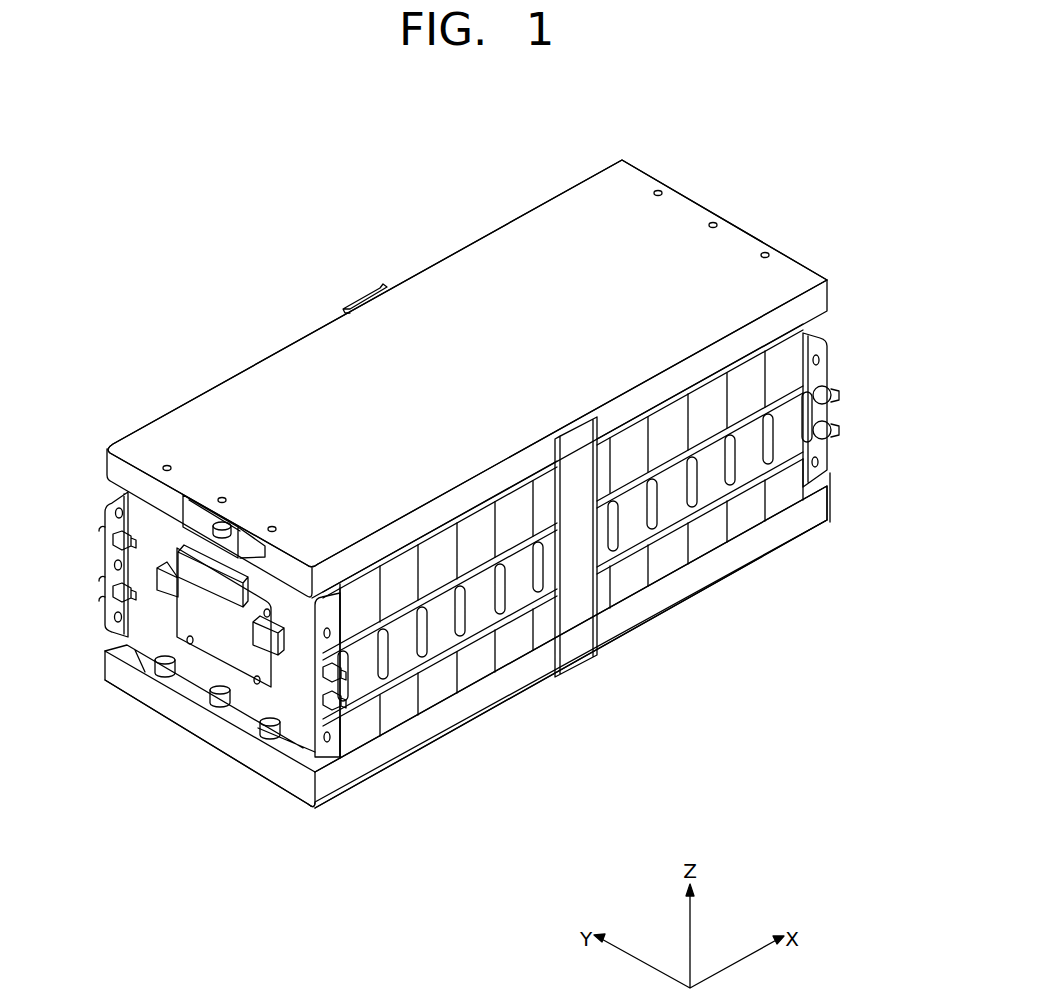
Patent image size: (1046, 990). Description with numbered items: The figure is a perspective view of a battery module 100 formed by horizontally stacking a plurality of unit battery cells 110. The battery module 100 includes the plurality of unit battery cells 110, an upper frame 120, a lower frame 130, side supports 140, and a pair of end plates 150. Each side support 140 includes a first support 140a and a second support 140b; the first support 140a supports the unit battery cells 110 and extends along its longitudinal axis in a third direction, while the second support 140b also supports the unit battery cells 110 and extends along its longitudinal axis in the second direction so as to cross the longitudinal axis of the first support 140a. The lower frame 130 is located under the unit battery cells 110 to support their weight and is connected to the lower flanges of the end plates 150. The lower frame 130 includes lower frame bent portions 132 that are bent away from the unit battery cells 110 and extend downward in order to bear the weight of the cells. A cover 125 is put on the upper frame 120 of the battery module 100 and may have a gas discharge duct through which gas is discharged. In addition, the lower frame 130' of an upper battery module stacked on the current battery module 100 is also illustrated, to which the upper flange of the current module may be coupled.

The battery module 100 is at (744, 188).
The unit battery cells 110 is at (782, 507).
The upper frame 120 is at (183, 523).
The cover 125 is at (183, 497).
The lower frame 130 is at (466, 684).
The lower frame of upper battery module 130' is at (467, 363).
The lower frame bent portions 132 is at (410, 742).
The side supports 140 is at (664, 545).
The first support 140a is at (637, 535).
The second support 140b is at (575, 652).
The end plates 150 is at (827, 343).